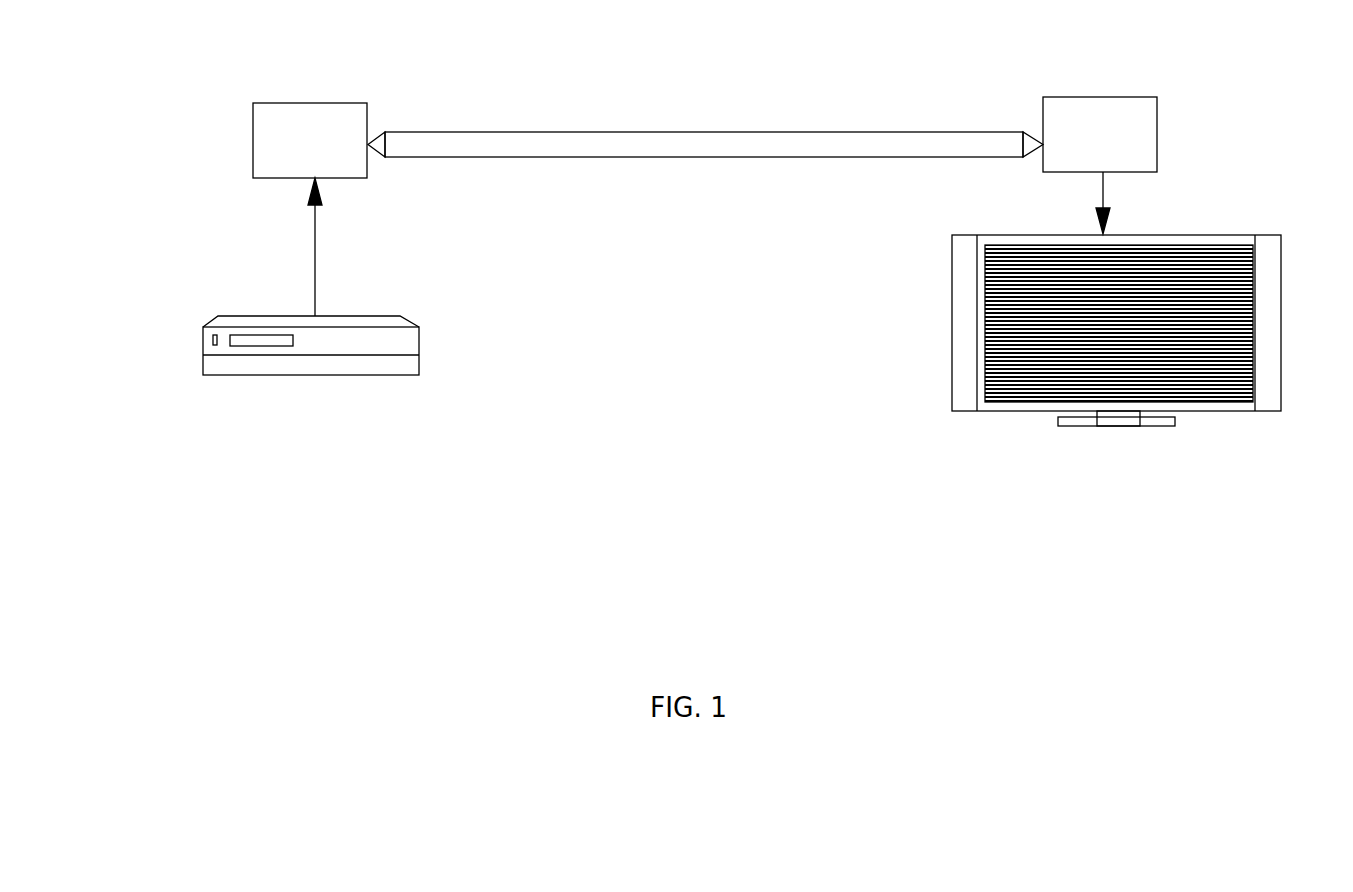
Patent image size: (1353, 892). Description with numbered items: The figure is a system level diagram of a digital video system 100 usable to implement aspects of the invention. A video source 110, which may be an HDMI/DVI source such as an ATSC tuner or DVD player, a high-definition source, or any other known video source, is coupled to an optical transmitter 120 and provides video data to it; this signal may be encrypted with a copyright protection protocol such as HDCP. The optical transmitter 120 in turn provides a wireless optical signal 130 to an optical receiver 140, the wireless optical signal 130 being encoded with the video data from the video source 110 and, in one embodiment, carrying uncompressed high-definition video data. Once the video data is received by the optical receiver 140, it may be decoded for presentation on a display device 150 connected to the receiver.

The digital video system 100 is at (226, 529).
The video source 110 is at (218, 316).
The optical transmitter 120 is at (254, 103).
The wireless optical signal 130 is at (692, 132).
The optical receiver 140 is at (1157, 97).
The display device 150 is at (1257, 235).